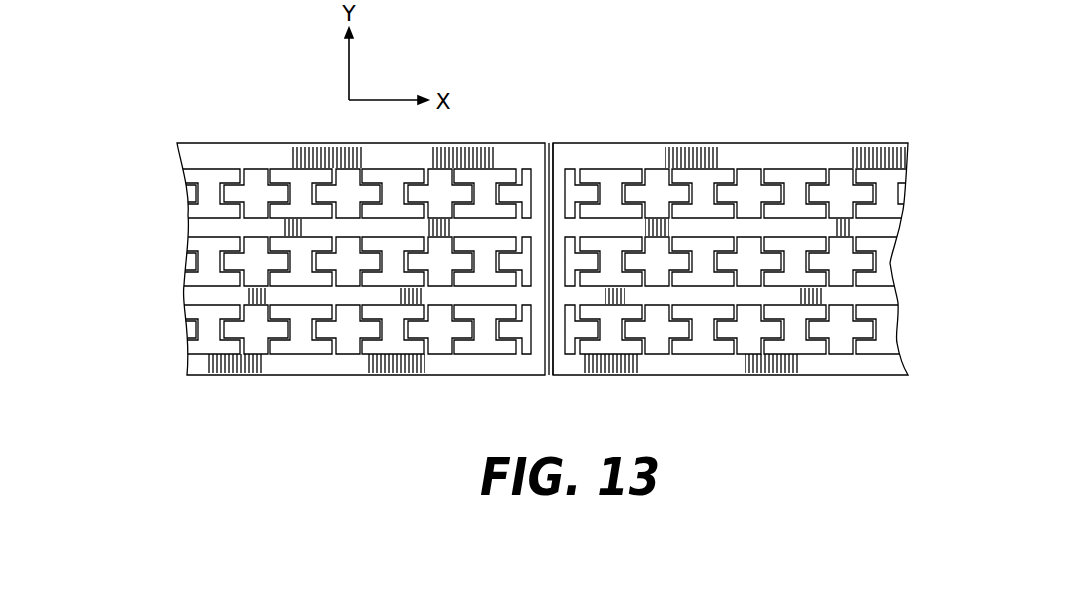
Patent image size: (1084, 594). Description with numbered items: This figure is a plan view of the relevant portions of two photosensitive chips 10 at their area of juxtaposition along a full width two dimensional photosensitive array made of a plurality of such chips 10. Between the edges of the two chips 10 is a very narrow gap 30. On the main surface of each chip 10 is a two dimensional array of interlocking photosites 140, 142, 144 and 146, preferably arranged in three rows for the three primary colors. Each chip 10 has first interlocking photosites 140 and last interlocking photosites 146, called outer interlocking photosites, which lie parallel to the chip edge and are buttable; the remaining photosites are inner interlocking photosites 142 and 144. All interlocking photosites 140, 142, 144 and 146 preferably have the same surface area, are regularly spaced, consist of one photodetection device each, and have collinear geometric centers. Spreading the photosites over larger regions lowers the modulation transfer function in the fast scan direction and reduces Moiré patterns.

The photosensitive chip 10 is at (188, 145).
The gap 30 is at (551, 143).
The first interlocking photosites 140 is at (575, 172).
The inner interlocking photosites 142 is at (285, 170).
The inner interlocking photosites 144 is at (253, 170).
The last interlocking photosites 146 is at (542, 172).